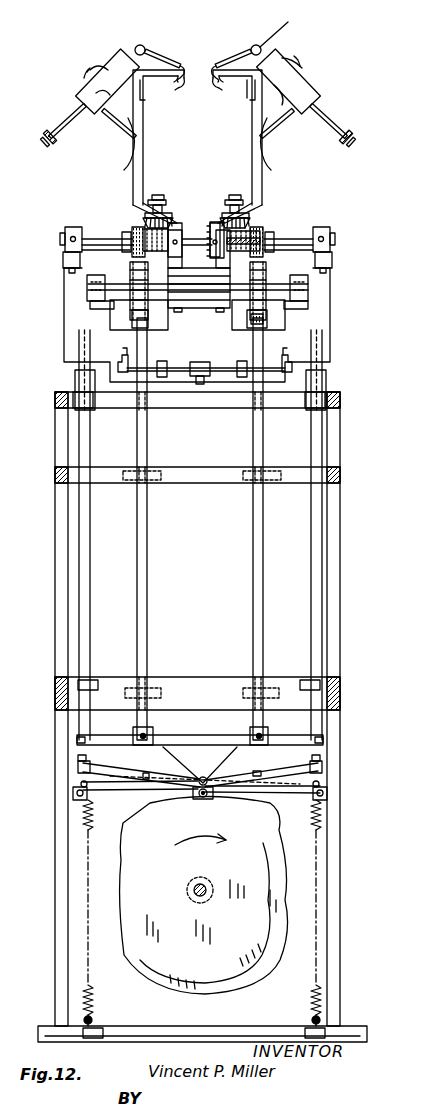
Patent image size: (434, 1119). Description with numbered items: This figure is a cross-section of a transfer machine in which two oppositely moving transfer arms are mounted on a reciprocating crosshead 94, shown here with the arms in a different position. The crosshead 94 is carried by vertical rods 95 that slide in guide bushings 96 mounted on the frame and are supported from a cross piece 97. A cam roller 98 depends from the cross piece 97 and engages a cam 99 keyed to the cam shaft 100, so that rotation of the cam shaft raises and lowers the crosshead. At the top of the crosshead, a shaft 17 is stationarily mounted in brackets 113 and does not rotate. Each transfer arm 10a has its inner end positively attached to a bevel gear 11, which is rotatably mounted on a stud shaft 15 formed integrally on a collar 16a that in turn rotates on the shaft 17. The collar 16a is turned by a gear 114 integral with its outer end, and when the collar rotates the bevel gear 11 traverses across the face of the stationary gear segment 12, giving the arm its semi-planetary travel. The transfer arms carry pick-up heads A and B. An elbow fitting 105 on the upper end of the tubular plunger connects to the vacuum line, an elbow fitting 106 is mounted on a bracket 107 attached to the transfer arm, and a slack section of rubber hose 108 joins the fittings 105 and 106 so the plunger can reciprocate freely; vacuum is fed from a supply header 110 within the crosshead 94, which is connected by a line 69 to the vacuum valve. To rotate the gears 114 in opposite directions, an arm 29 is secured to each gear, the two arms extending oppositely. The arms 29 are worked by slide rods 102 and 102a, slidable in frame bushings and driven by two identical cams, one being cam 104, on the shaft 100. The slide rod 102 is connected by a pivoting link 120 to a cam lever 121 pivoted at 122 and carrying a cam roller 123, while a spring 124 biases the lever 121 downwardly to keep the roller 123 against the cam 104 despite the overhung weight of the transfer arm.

The transfer arm 10a is at (252, 132).
The bevel gear 11 is at (178, 208).
The stationary gear segment 12 is at (208, 232).
The stud shaft 15 is at (228, 232).
The collar 16a is at (141, 223).
The shaft 17 is at (96, 238).
The arm 29 is at (132, 265).
The line 69 is at (200, 362).
The crosshead 94 is at (176, 317).
The vertical rods 95 is at (79, 372).
The guide bushings 96 is at (70, 392).
The cross piece 97 is at (104, 740).
The cam roller 98 is at (214, 768).
The cam 99 is at (270, 800).
The cam shaft 100 is at (211, 896).
The slide rod 102 is at (147, 518).
The slide rod 102a is at (253, 552).
The cam 104 is at (250, 945).
The elbow fitting 105 is at (271, 27).
The elbow fitting 106 is at (208, 68).
The bracket 107 is at (245, 90).
The rubber hose 108 is at (216, 64).
The supply header 110 is at (172, 352).
The brackets 113 is at (72, 224).
The gear 114 is at (266, 260).
The pivoting link 120 is at (148, 750).
The cam lever 121 is at (124, 780).
The pivot 122 is at (327, 792).
The cam roller 123 is at (198, 798).
The spring 124 is at (92, 1004).
The pick-up head A is at (90, 105).
The pick-up head B is at (303, 103).